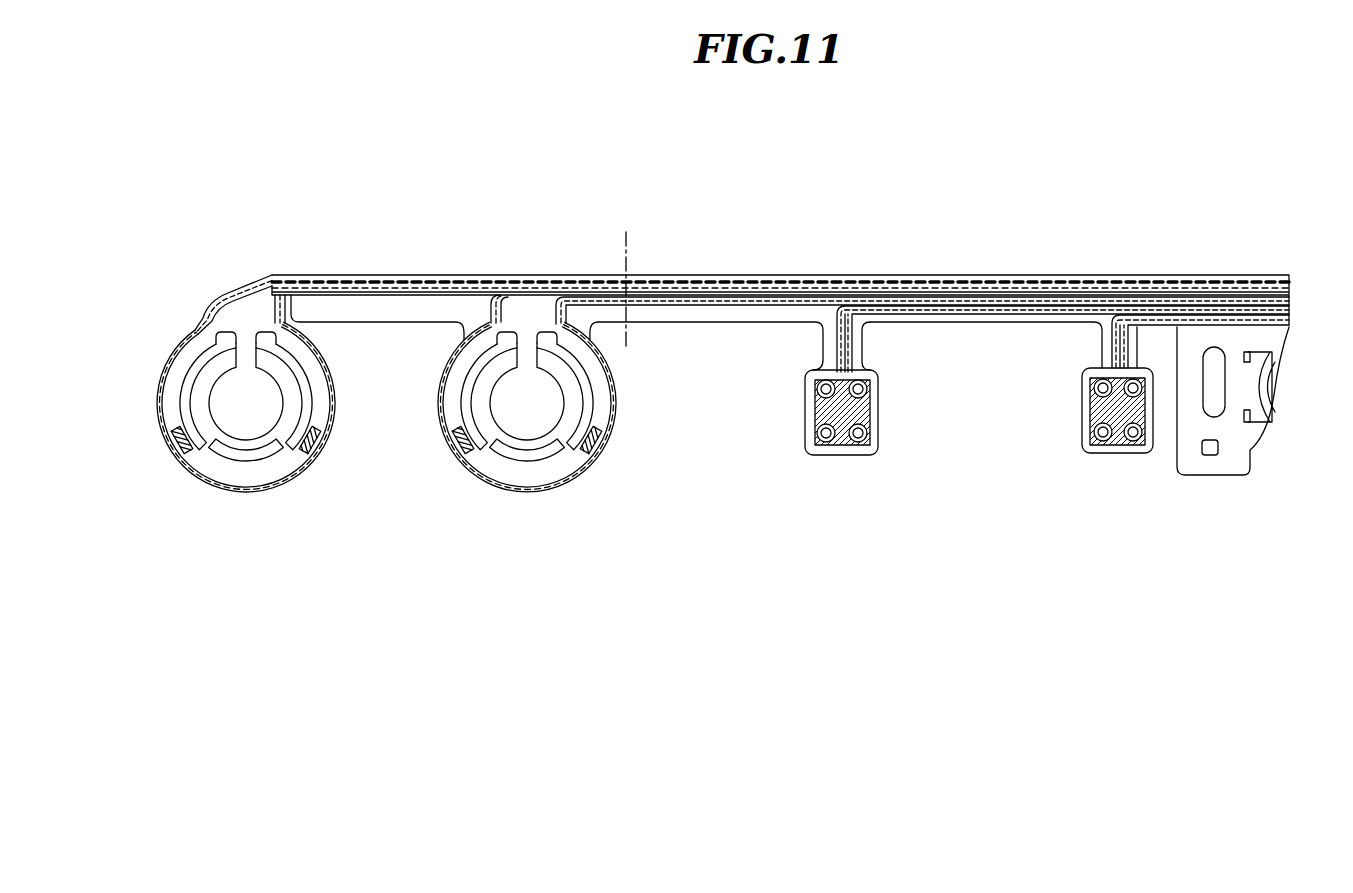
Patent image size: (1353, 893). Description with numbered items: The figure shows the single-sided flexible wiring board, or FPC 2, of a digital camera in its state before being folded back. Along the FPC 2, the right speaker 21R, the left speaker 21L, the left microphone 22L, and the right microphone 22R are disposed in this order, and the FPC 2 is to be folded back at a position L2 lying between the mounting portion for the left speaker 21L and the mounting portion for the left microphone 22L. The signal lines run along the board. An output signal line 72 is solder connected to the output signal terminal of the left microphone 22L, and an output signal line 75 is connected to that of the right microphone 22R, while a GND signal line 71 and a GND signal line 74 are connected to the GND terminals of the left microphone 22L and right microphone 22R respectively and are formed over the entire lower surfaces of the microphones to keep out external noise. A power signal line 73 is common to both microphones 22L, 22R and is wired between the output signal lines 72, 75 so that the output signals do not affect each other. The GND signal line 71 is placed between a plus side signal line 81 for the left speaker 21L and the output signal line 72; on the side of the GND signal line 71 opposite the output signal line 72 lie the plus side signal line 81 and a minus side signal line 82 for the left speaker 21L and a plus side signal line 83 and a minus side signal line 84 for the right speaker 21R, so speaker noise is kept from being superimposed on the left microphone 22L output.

The FPC 2 is at (1077, 275).
The right speaker 21R is at (246, 493).
The left speaker 21L is at (527, 493).
The left microphone 22L is at (869, 388).
The right microphone 22R is at (1125, 455).
The GND signal line 71 is at (833, 303).
The output signal line 72 is at (834, 370).
The power signal line 73 is at (947, 322).
The GND signal line 74 is at (1167, 330).
The output signal line 75 is at (1110, 340).
The plus side signal line 81 is at (557, 307).
The minus side signal line 82 is at (495, 313).
The plus side signal line 83 is at (270, 280).
The minus side signal line 84 is at (212, 303).
The position L2 is at (626, 272).